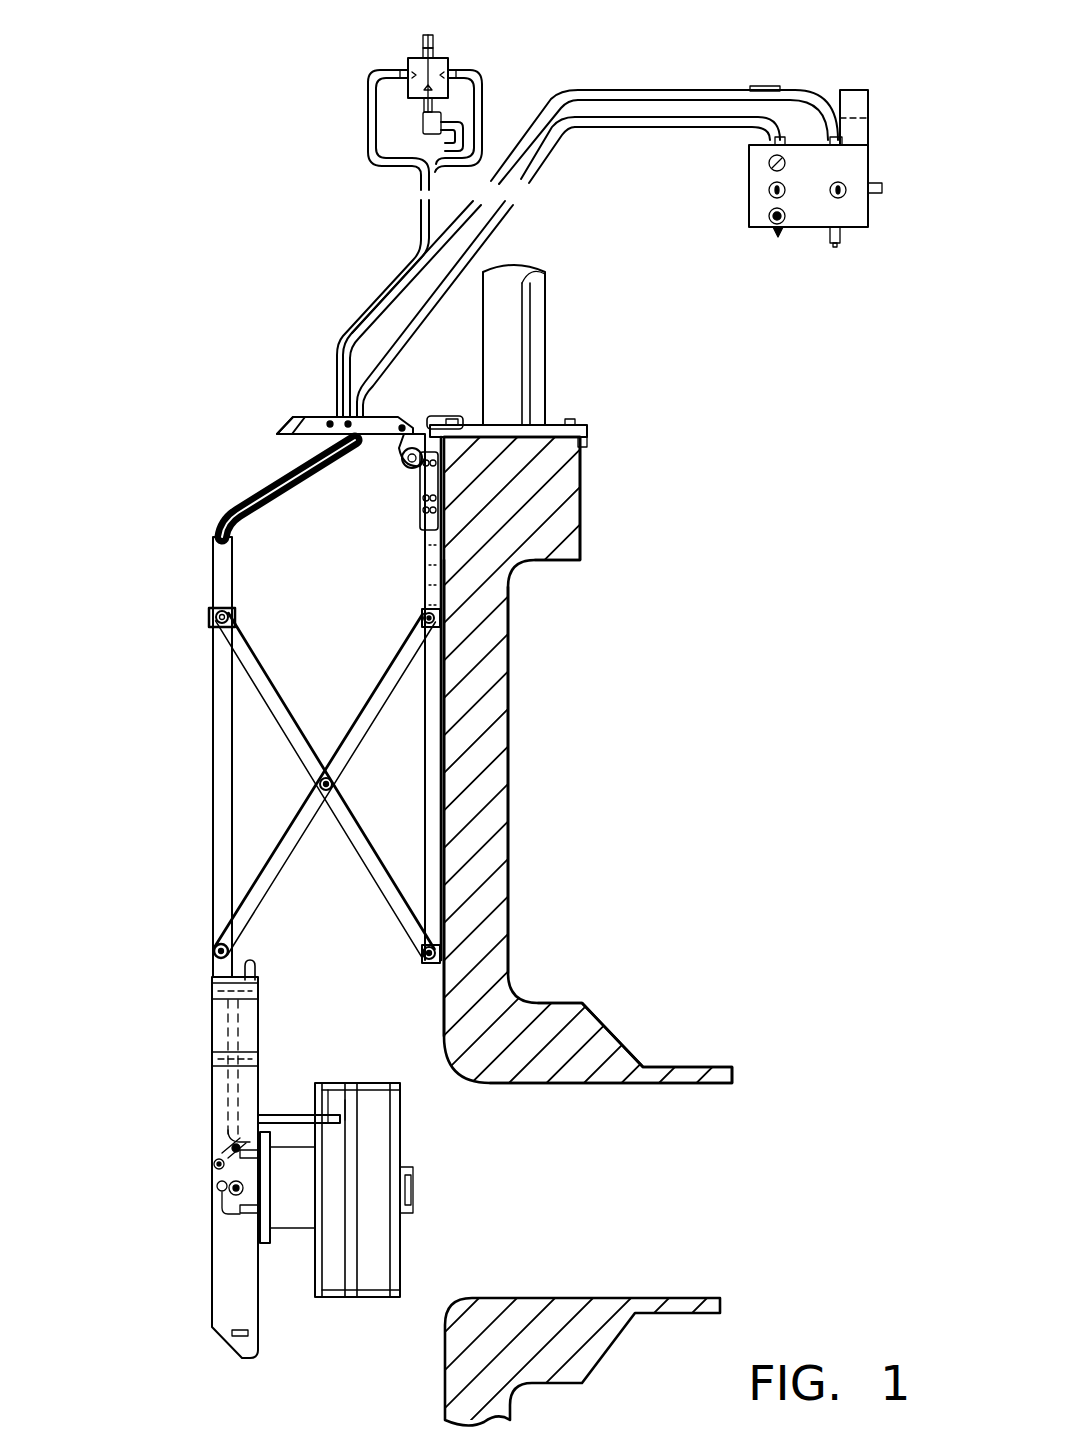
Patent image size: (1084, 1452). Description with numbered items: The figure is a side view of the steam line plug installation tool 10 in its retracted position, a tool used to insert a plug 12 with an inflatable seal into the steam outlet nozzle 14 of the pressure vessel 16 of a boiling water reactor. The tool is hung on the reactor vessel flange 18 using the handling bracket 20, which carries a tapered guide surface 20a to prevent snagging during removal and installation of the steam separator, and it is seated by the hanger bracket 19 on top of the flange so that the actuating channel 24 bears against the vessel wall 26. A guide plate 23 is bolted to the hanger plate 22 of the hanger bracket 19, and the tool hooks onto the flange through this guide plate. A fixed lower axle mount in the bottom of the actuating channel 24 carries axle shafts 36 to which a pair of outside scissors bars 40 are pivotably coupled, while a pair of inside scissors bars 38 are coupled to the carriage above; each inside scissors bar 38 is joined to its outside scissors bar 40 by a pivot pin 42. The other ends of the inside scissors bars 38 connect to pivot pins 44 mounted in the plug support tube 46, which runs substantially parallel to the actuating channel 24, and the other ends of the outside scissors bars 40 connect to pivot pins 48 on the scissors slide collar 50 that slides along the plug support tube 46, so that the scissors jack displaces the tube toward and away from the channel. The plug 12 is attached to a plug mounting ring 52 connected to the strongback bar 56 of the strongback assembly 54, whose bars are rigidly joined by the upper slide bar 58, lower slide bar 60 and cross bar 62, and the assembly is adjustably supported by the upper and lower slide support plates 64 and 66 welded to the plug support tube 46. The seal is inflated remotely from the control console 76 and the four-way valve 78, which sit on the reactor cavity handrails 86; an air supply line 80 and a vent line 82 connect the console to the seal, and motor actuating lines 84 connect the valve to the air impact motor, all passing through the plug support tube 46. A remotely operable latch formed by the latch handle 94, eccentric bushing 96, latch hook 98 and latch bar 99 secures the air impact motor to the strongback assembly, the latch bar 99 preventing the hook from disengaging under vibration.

The steam line plug installation tool 10 is at (180, 806).
The plug 12 is at (418, 1247).
The steam outlet nozzle 14 is at (612, 1047).
The pressure vessel 16 is at (655, 798).
The reactor vessel flange 18 is at (568, 524).
The hanger bracket 19 is at (400, 505).
The handling bracket 20 is at (316, 412).
The tapered guide surface 20a is at (292, 425).
The hanger plate 22 is at (450, 416).
The guide plate 23 is at (570, 418).
The actuating channel 24 is at (431, 770).
The vessel wall 26 is at (527, 710).
The axle shafts 36 is at (426, 962).
The inside scissors bars 38 is at (389, 683).
The outside scissors bars 40 is at (389, 887).
The pivot pin 42 is at (319, 780).
The pivot pins 44 is at (214, 946).
The plug support tube 46 is at (218, 735).
The pivot pins 48 is at (213, 608).
The scissors slide collar 50 is at (212, 626).
The plug mounting ring 52 is at (264, 1198).
The strongback assembly 54 is at (200, 1118).
The strongback bar 56 is at (220, 1270).
The upper slide bar 58 is at (268, 998).
The lower slide bar 60 is at (268, 1060).
The cross bar 62 is at (255, 1332).
The upper slide support plate 64 is at (212, 992).
The lower slide support plate 66 is at (224, 1060).
The control console 76 is at (795, 262).
The four-way valve 78 is at (392, 60).
The air supply line 80 is at (552, 142).
The vent line 82 is at (610, 90).
The motor actuating lines 84 is at (385, 296).
The reactor cavity handrails 86 is at (797, 78).
The latch handle 94 is at (220, 1165).
The eccentric bushing 96 is at (224, 1206).
The latch hook 98 is at (218, 1178).
The latch bar 99 is at (226, 1146).